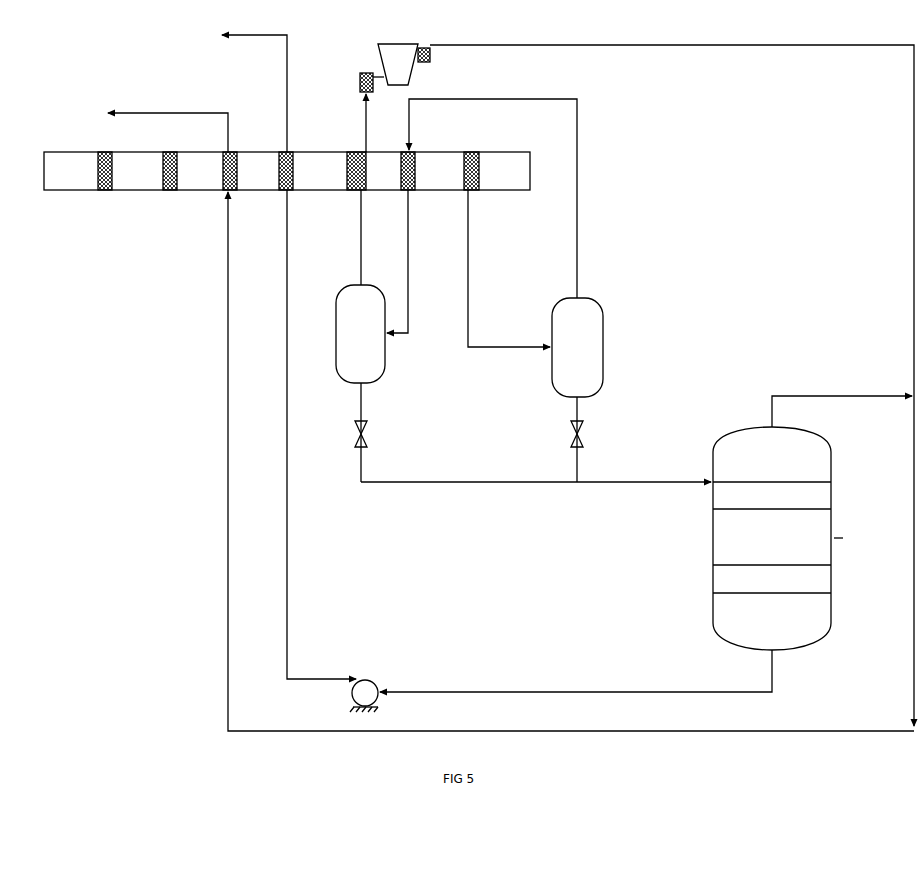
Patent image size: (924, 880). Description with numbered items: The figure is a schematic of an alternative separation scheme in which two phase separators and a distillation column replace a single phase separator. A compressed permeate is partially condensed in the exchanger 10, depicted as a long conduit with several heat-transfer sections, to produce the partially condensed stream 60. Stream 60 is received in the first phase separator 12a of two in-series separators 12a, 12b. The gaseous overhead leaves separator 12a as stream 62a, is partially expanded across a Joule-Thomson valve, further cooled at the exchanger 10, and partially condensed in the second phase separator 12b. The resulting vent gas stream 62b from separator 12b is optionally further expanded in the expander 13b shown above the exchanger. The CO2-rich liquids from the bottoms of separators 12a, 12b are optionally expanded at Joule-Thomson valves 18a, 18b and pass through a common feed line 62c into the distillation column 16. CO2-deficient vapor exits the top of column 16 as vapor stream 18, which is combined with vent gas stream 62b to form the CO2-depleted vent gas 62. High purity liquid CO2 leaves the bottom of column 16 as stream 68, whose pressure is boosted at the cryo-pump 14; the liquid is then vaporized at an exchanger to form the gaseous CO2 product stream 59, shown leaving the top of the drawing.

The exchanger 10 is at (287, 171).
The expander 13b is at (395, 91).
The gaseous CO2 product stream 59 is at (254, 83).
The CO2-depleted vent gas 62 is at (168, 132).
The gaseous overhead stream 62a is at (515, 198).
The vent gas stream 62b is at (341, 237).
The partially condensed stream 60 is at (509, 268).
The phase separator 12b is at (372, 286).
The phase separator 12a is at (577, 347).
The Joule-Thomson valve 18b is at (374, 432).
The Joule-Thomson valve 18a is at (563, 439).
The feed line 62c is at (536, 468).
The distillation column 16 is at (778, 538).
The vapor stream 18 is at (842, 395).
The high purity liquid CO2 stream 68 is at (576, 681).
The cryo-pump 14 is at (332, 451).